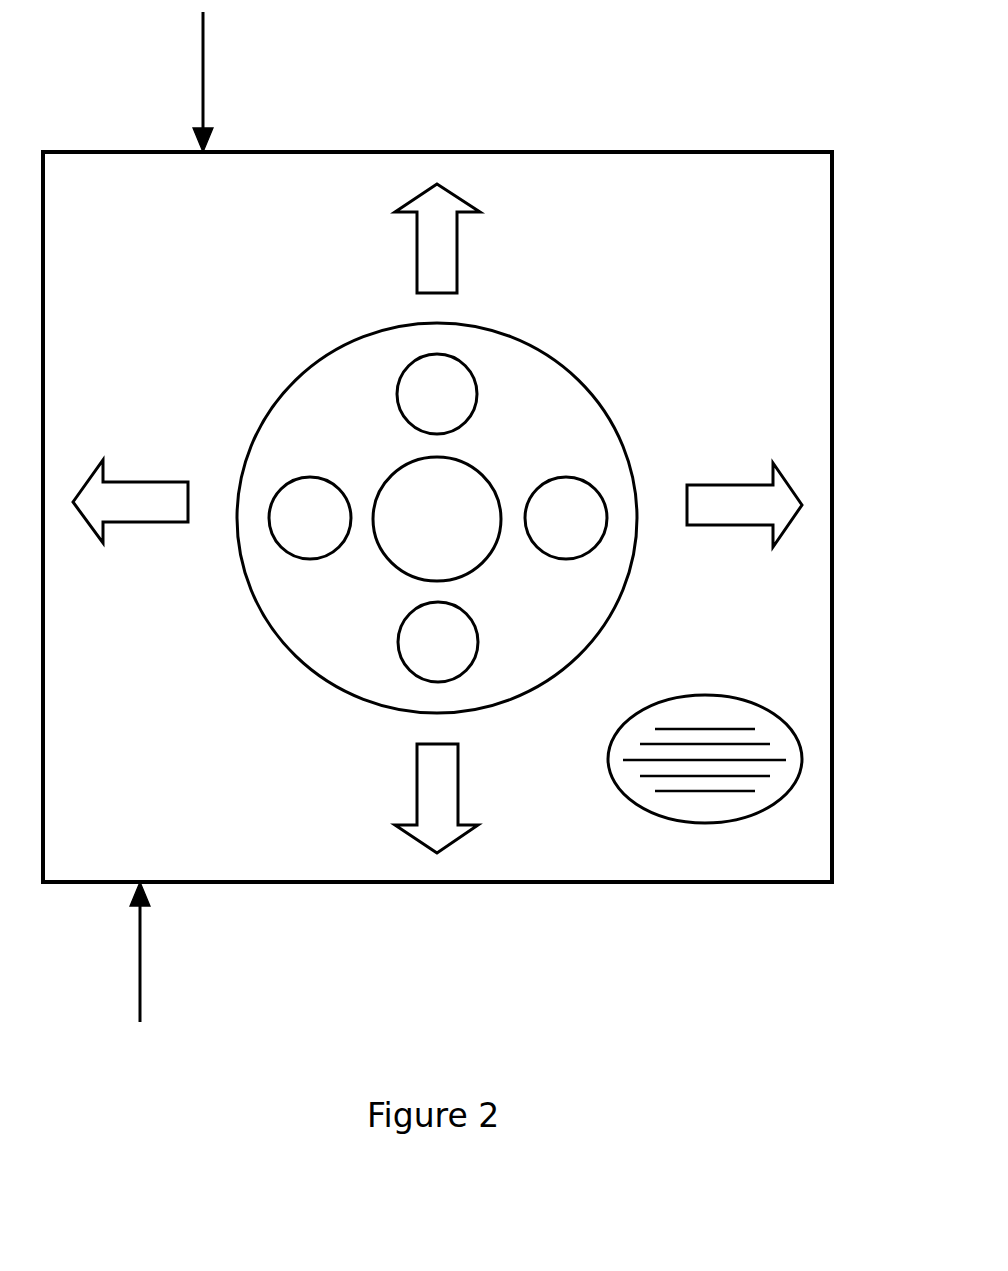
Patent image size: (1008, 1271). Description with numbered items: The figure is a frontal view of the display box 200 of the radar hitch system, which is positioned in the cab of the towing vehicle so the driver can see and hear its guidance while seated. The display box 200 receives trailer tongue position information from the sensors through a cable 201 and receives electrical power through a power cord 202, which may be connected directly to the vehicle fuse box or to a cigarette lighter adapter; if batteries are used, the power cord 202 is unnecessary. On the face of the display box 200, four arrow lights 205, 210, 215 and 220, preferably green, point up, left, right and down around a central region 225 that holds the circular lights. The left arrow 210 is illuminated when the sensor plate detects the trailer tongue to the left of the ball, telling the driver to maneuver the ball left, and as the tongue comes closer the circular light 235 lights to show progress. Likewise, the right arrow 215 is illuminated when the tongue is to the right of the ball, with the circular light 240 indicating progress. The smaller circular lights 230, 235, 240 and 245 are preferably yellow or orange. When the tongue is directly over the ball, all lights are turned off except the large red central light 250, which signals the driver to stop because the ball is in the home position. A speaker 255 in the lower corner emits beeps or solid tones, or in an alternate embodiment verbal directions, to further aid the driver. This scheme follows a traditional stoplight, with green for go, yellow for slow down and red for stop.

The display box 200 is at (115, 235).
The cable 201 is at (142, 960).
The power cord 202 is at (206, 60).
The arrow light 205 is at (445, 248).
The left arrow 210 is at (142, 512).
The right arrow 215 is at (747, 513).
The arrow light 220 is at (445, 760).
The processing core 225 is at (350, 417).
The circular light 230 is at (452, 402).
The circular light 235 is at (324, 525).
The circular light 240 is at (582, 527).
The circular light 245 is at (452, 652).
The central light 250 is at (455, 525).
The speaker 255 is at (785, 748).